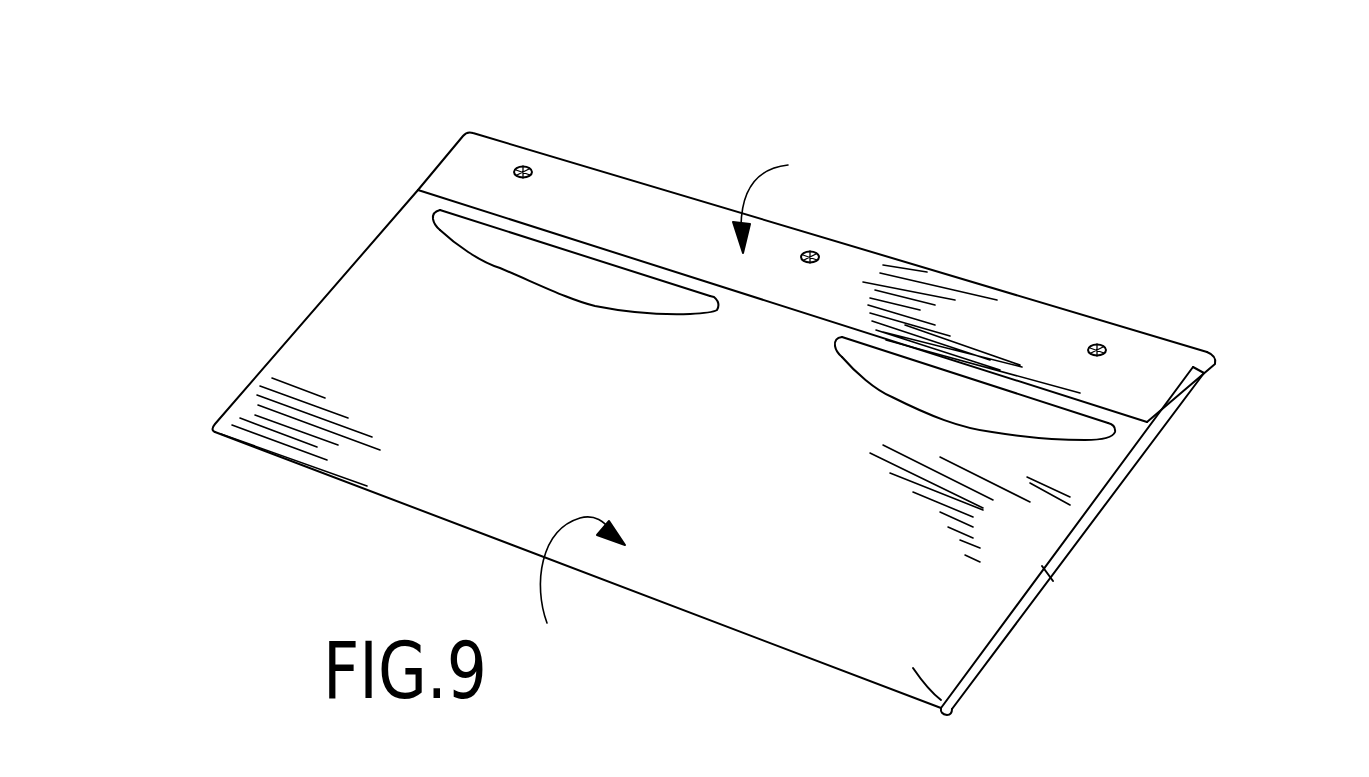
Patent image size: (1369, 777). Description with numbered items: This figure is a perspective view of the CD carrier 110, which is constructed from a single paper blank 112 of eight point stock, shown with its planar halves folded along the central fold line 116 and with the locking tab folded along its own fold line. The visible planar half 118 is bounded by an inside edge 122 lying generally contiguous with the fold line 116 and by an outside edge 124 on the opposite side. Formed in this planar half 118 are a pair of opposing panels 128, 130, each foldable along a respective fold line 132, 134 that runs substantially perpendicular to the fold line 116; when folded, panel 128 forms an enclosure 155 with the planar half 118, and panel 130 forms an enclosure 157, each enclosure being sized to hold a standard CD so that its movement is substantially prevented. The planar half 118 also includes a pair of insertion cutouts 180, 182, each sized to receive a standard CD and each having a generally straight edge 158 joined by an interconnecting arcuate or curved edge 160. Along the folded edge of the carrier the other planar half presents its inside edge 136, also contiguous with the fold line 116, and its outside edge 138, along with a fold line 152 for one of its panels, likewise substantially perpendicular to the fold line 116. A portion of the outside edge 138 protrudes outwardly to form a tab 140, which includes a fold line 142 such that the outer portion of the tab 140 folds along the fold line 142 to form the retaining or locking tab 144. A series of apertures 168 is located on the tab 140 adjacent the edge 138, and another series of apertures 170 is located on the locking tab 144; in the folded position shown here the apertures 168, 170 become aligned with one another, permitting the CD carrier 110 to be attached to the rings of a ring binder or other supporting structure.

The CD carrier 110 is at (194, 385).
The paper blank 112 is at (398, 209).
The fold line 116 is at (709, 622).
The planar half 118 is at (724, 491).
The inside edge 122 is at (954, 696).
The outside edge 124 is at (1177, 410).
The panel 128 is at (579, 287).
The panel 130 is at (978, 411).
The fold line 132 is at (305, 320).
The fold line 134 is at (1047, 573).
The inside edge 136 is at (990, 660).
The outside edge 138 is at (1207, 380).
The tab 140 is at (1193, 400).
The fold line 142 is at (1194, 347).
The locking tab 144 is at (1140, 383).
The fold line 152 is at (1093, 527).
The enclosure 155 is at (633, 287).
The enclosure 157 is at (1006, 420).
The straight edge 158 is at (608, 265).
The curved edge 160 is at (547, 297).
The apertures 168 is at (527, 164).
The apertures 170 is at (518, 165).
The cutout 180 is at (620, 308).
The cutout 182 is at (878, 390).